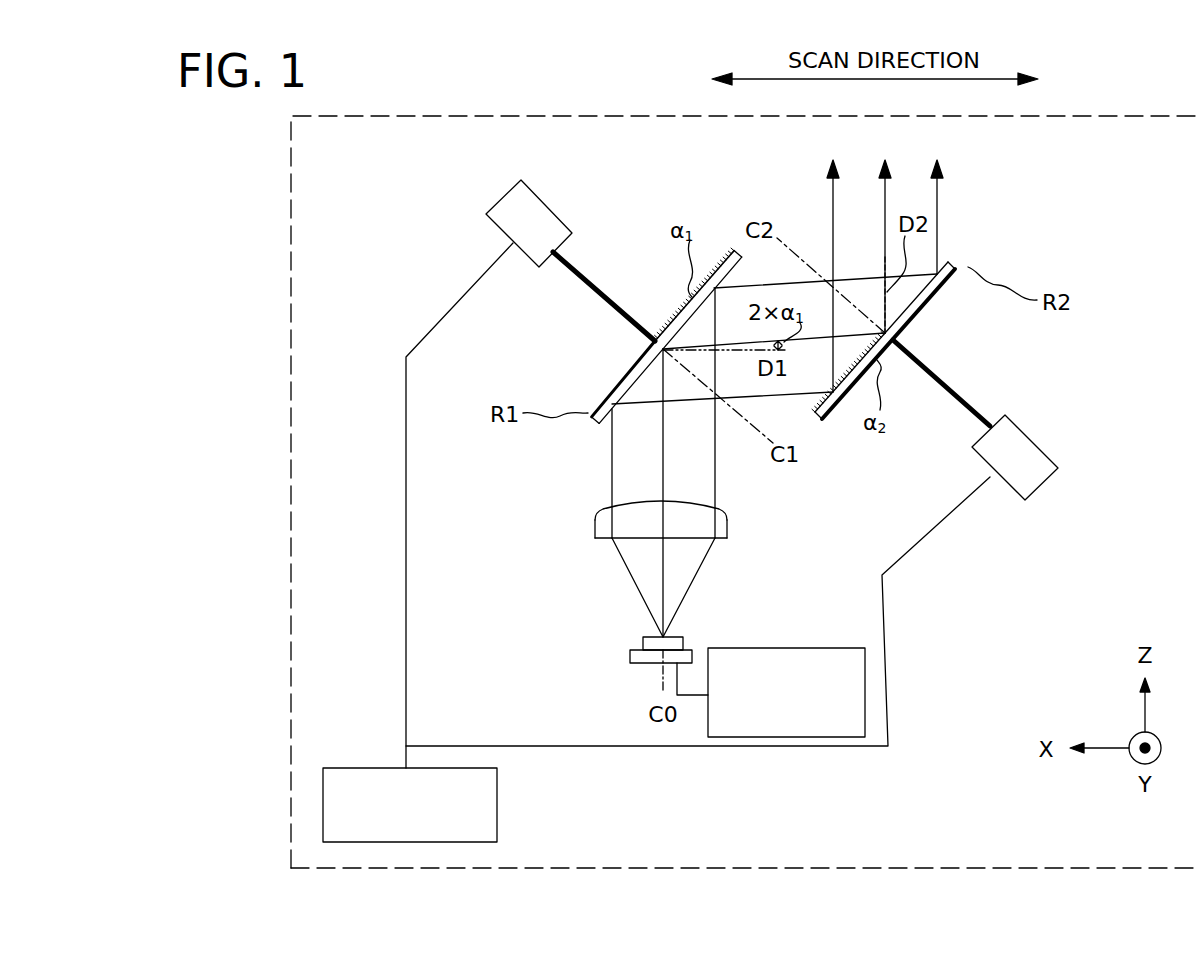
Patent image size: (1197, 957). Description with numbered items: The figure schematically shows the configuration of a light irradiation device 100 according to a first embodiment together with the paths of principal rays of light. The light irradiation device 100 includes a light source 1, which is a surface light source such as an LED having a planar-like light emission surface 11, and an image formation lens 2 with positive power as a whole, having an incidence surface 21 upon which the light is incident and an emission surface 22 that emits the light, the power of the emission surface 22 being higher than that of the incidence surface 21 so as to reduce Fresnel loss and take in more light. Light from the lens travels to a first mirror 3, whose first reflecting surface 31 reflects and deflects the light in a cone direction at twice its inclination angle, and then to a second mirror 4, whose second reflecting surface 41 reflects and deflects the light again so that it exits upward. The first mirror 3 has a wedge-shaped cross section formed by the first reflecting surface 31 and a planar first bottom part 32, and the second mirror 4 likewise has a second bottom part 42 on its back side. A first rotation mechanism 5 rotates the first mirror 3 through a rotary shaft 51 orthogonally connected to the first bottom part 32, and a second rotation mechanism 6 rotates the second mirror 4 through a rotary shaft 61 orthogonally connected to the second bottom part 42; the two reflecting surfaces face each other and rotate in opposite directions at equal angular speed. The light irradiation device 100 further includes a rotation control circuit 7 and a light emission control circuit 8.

The light irradiation device 100 is at (291, 352).
The light source 1 is at (662, 664).
The light emission surface 11 is at (675, 637).
The image formation lens 2 is at (625, 554).
The incidence surface 21 is at (613, 541).
The emission surface 22 is at (622, 500).
The first mirror 3 is at (634, 352).
The first reflecting surface 31 is at (650, 392).
The first bottom part 32 is at (655, 350).
The second mirror 4 is at (929, 309).
The second reflecting surface 41 is at (902, 313).
The second bottom part 42 is at (915, 318).
The first rotation mechanism 5 is at (502, 197).
The rotary shaft 51 is at (601, 295).
The second rotation mechanism 6 is at (1042, 490).
The rotary shaft 61 is at (952, 383).
The rotation control circuit 7 is at (497, 808).
The light emission control circuit 8 is at (793, 648).